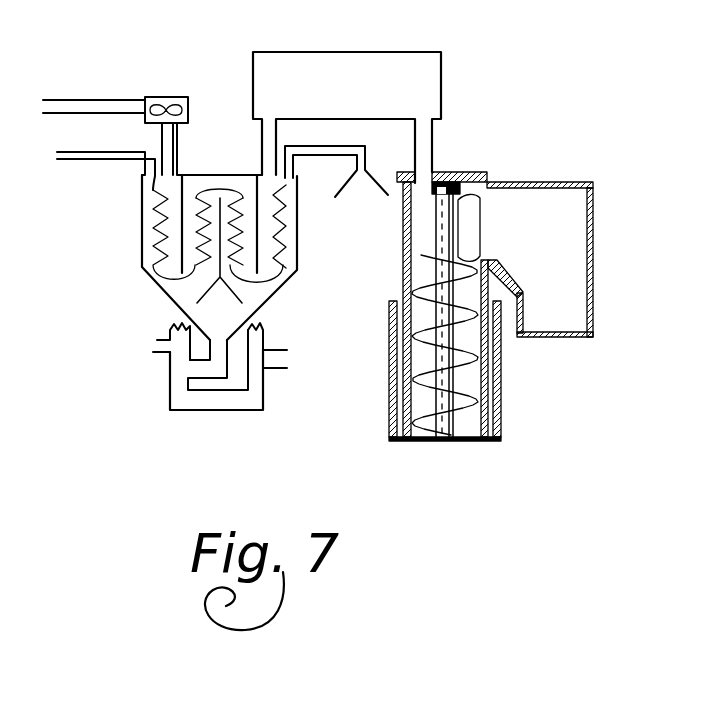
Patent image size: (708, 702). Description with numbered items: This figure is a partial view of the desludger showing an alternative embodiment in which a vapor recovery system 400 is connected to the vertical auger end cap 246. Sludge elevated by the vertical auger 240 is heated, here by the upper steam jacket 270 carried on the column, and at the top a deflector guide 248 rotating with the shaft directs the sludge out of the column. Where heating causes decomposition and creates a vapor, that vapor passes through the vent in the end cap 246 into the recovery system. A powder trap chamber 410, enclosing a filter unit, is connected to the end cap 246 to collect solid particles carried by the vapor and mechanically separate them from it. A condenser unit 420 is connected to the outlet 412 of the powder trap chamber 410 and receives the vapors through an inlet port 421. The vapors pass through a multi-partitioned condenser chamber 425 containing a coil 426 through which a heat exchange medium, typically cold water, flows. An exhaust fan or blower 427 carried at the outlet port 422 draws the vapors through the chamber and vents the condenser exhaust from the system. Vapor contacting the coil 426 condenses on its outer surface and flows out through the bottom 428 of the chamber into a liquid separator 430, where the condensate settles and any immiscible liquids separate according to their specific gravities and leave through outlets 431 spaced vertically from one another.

The vapor recovery system 400 is at (184, 418).
The powder trap chamber 410 is at (415, 52).
The outlet 412 is at (262, 145).
The condenser unit 420 is at (212, 257).
The inlet port 421 is at (270, 178).
The outlet port 422 is at (172, 168).
The multi-partitioned condenser chamber 425 is at (283, 284).
The coil 426 is at (178, 282).
The exhaust fan or blower 427 is at (201, 61).
The bottom of the chamber 428 is at (230, 340).
The liquid separator 430 is at (323, 445).
The outlets 431 is at (160, 338).
The vertical auger 240 is at (460, 430).
The vertical auger end cap 246 is at (457, 170).
The deflector guide 248 is at (480, 218).
The upper steam jacket 270 is at (503, 375).